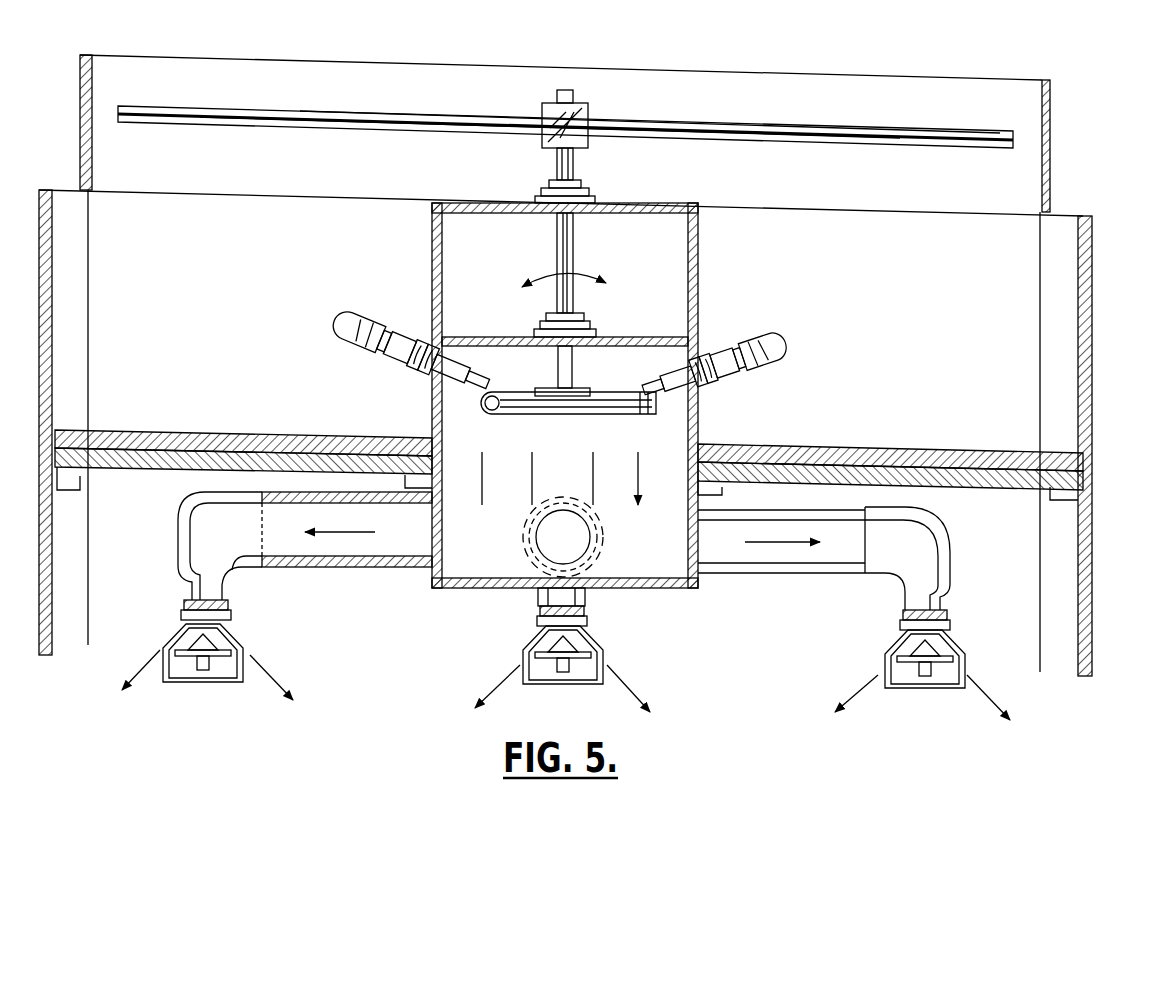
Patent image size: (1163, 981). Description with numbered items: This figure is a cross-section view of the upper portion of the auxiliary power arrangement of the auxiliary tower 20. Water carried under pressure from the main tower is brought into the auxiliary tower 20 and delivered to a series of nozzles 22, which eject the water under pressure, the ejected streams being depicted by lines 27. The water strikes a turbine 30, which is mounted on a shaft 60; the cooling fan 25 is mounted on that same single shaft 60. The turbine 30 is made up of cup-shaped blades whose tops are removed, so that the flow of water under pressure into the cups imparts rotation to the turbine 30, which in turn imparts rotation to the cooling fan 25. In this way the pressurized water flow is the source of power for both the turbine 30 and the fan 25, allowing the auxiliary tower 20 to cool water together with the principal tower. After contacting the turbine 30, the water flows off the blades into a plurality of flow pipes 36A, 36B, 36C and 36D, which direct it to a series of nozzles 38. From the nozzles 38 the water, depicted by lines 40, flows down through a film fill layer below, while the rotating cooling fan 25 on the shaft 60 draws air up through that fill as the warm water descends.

The auxiliary tower 20 is at (1090, 176).
The nozzles 22 is at (458, 372).
The cooling fan 25 is at (460, 130).
The lines 27 is at (500, 386).
The turbine 30 is at (656, 420).
The flow pipe 36A is at (777, 557).
The flow pipe 36B is at (535, 597).
The flow pipe 36C is at (335, 545).
The flow pipe 36D is at (563, 537).
The nozzles 38 is at (228, 680).
The lines 40 is at (270, 690).
The shaft 60 is at (567, 370).